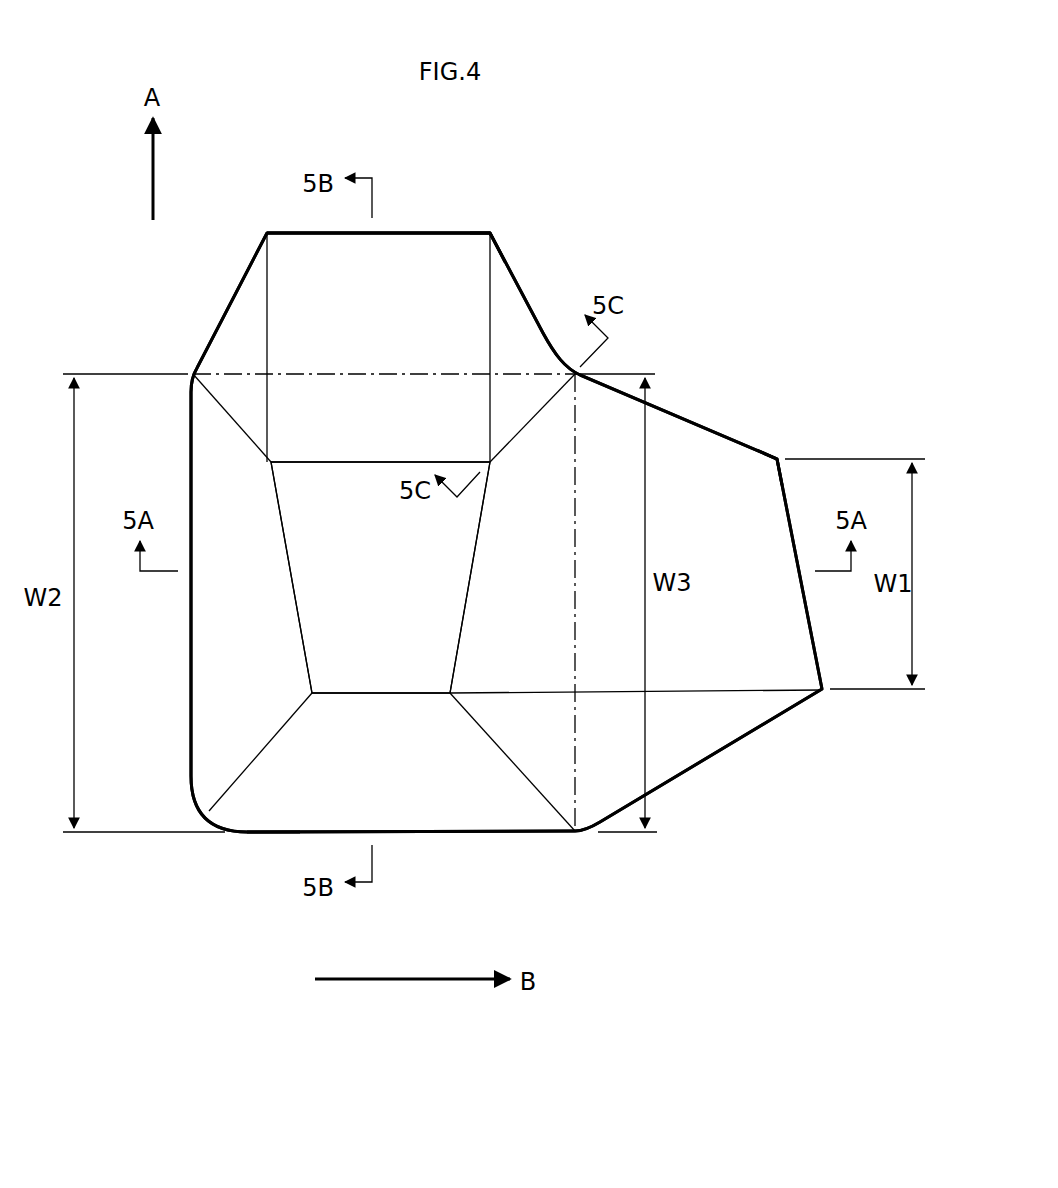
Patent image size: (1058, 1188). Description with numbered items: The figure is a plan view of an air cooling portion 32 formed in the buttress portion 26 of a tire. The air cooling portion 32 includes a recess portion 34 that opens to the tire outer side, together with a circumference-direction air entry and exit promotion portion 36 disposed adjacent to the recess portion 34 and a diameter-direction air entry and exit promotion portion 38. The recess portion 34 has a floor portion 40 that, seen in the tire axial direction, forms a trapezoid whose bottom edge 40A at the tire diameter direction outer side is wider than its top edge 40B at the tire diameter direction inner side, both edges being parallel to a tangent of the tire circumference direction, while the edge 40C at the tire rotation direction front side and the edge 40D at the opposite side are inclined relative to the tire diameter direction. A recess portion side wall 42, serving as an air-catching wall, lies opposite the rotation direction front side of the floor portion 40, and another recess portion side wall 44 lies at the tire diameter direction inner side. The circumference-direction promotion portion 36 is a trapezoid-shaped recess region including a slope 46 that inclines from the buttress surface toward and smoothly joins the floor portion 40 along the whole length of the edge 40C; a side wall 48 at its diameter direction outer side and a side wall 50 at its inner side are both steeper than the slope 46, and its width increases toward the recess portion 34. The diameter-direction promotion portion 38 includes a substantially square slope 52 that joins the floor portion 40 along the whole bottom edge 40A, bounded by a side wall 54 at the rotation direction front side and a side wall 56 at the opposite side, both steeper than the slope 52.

The buttress portion 26 is at (784, 373).
The air cooling portion 32 is at (270, 206).
The recess portion 34 is at (263, 842).
The circumference-direction air entry and exit promotion portion 36 is at (792, 497).
The diameter-direction air entry and exit promotion portion 38 is at (491, 228).
The floor portion 40 is at (367, 571).
The bottom edge 40A is at (353, 462).
The top edge 40B is at (386, 693).
The edge 40C is at (472, 562).
The edge 40D is at (295, 576).
The recess portion side wall 42 is at (228, 652).
The recess portion side wall 44 is at (490, 797).
The slope 46 is at (770, 656).
The side wall 48 is at (697, 445).
The side wall 50 is at (705, 718).
The slope 52 is at (427, 233).
The side wall 54 is at (508, 326).
The side wall 56 is at (232, 335).